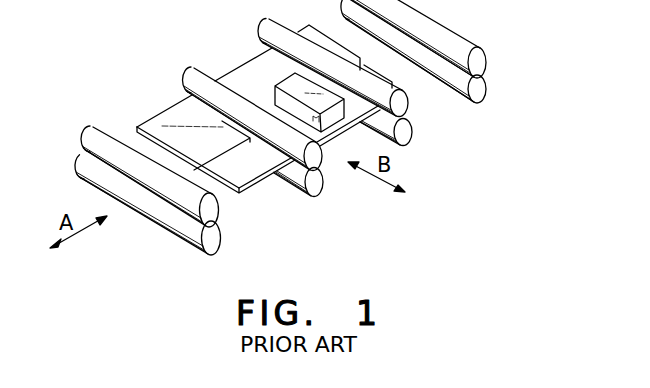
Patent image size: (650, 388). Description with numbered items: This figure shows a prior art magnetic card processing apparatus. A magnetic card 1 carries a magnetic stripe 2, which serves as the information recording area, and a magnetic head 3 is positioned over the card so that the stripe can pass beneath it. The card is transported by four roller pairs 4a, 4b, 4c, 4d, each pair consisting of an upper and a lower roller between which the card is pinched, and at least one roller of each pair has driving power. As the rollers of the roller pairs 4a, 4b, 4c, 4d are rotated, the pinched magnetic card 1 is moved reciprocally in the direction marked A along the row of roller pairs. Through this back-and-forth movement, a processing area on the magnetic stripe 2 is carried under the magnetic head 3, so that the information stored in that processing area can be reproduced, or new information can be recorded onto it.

The magnetic card 1 is at (160, 117).
The magnetic stripe 2 is at (227, 153).
The magnetic head 3 is at (261, 50).
The roller pair 4a is at (209, 212).
The roller pair 4b is at (313, 157).
The roller pair 4c is at (399, 105).
The roller pair 4d is at (477, 63).